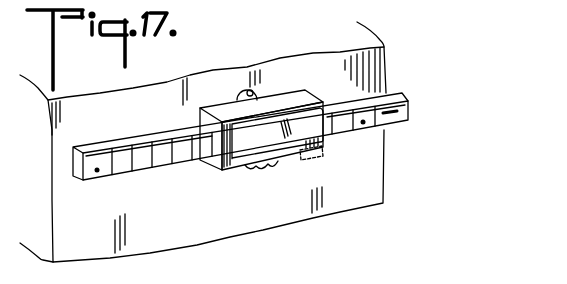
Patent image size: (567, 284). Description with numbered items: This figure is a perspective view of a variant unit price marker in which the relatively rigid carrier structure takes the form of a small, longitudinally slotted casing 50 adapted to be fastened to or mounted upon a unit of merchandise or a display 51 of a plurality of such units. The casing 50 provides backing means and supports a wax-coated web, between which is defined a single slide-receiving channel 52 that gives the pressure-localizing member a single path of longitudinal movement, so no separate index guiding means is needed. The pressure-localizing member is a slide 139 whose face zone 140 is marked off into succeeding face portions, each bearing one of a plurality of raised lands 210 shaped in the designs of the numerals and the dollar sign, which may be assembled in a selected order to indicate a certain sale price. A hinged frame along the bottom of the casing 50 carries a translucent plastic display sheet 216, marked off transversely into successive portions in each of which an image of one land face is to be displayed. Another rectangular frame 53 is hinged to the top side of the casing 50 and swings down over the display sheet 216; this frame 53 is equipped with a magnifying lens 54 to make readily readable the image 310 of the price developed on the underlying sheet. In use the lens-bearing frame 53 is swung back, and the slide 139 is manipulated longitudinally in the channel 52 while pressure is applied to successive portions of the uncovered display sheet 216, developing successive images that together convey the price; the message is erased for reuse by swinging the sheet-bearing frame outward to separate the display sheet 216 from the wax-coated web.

The longitudinally slotted casing 50 is at (274, 121).
The display 51 is at (252, 159).
The slide-receiving channel 52 is at (196, 128).
The rectangular frame 53 is at (296, 160).
The magnifying lens 54 is at (237, 152).
The slide 139 is at (80, 190).
The face zone 140 is at (84, 151).
The lands 210 is at (157, 176).
The translucent plastic display sheet 216 is at (309, 152).
The image of the price 310 is at (305, 128).